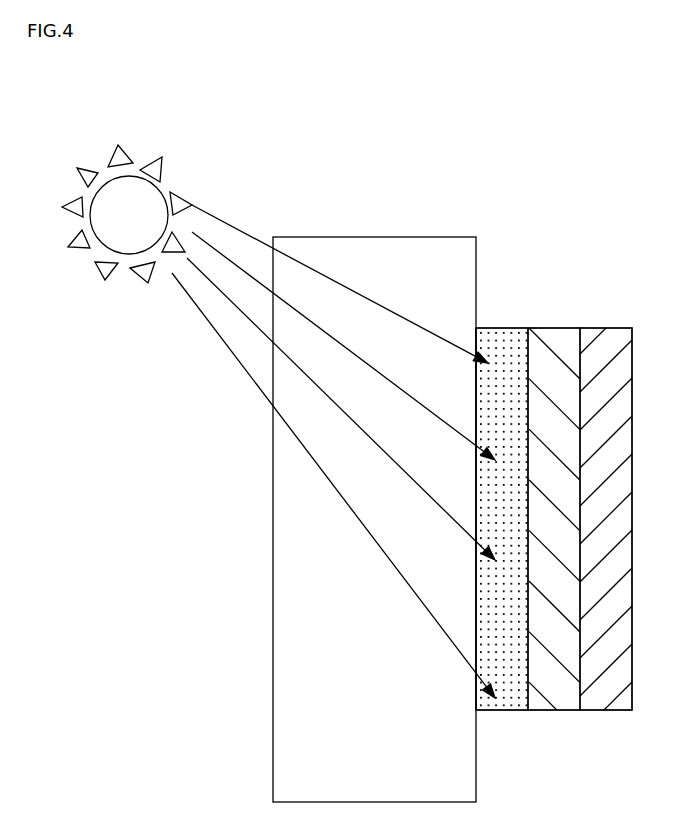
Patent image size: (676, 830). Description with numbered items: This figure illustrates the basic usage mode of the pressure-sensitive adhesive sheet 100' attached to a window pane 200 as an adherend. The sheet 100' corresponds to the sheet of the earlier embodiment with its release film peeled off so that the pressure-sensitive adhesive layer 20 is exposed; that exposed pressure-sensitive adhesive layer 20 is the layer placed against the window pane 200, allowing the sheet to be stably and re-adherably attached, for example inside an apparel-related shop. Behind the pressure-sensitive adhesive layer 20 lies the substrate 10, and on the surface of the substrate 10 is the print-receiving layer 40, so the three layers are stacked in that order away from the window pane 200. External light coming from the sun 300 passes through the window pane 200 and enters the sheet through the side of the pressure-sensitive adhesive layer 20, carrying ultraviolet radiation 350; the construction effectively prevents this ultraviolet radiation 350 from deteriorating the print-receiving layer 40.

The sun 300 is at (165, 190).
The ultraviolet radiation 350 is at (230, 350).
The window pane 200 is at (377, 252).
The pressure-sensitive adhesive sheet 100' is at (554, 474).
The pressure-sensitive adhesive layer 20 is at (496, 343).
The substrate 10 is at (553, 347).
The print-receiving layer 40 is at (606, 499).